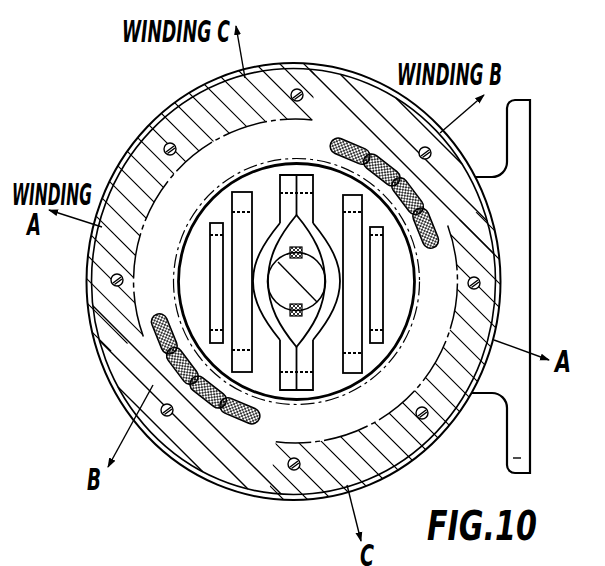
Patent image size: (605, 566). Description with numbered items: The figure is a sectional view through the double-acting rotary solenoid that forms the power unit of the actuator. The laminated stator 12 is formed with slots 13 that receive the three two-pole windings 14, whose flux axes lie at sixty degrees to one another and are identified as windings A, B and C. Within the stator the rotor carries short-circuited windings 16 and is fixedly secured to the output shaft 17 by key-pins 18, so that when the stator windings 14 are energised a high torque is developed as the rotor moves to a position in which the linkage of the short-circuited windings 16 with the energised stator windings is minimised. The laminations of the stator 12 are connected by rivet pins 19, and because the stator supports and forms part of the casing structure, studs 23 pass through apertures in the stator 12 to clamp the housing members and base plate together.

The stator 12 is at (153, 386).
The slots 13 is at (218, 413).
The windings 14 is at (157, 348).
The short-circuited windings 16 is at (353, 313).
The output shaft 17 is at (279, 272).
The key-pins 18 is at (303, 252).
The rivet pins 19 is at (299, 89).
The studs 23 is at (164, 146).